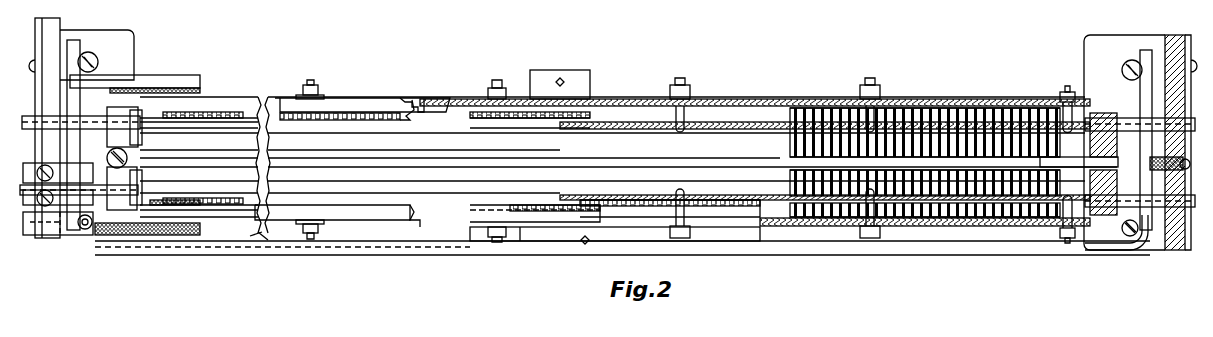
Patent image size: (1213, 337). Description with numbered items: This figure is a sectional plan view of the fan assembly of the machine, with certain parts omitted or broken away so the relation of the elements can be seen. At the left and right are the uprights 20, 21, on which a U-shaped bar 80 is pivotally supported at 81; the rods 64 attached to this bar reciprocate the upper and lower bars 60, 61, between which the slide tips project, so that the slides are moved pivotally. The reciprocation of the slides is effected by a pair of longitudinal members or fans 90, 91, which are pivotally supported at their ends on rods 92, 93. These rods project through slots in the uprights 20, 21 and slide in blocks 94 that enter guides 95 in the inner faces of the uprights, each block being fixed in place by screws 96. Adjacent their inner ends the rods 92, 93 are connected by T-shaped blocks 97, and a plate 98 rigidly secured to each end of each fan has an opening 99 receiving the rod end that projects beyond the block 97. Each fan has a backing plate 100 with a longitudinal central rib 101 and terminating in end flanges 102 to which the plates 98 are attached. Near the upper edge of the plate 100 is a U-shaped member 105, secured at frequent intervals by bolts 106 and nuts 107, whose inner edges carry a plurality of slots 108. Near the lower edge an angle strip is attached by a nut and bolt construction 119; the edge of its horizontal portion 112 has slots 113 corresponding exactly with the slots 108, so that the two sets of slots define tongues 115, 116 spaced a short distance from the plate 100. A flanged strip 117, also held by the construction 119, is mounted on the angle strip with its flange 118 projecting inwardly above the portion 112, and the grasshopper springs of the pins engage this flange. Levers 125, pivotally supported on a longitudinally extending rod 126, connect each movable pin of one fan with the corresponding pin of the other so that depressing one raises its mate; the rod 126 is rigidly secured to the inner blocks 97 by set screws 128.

The upright 20 is at (82, 62).
The upright 21 is at (1138, 68).
The upper bar 60 is at (120, 222).
The lower bar 61 is at (28, 230).
The rod 64 is at (85, 228).
The U-shaped bar 80 is at (440, 255).
The pivot 81 is at (58, 24).
The fan 90 is at (392, 251).
The fan 91 is at (384, 100).
The rod 92 is at (112, 165).
The rod 93 is at (112, 112).
The block 94 is at (1160, 240).
The guide 95 is at (1125, 80).
The screw 96 is at (1183, 172).
The T-shaped block 97 is at (108, 132).
The plate 98 is at (132, 120).
The opening 99 is at (1062, 92).
The backing plate 100 is at (728, 122).
The central rib 101 is at (641, 171).
The flange 102 is at (1050, 110).
The U-shaped member 105 is at (322, 108).
The bolt 106 is at (308, 85).
The nut 107 is at (318, 95).
The slot 108 is at (228, 115).
The horizontal portion 112 is at (505, 110).
The slot 113 is at (582, 105).
The tongue 115 is at (200, 112).
The tongue 116 is at (545, 222).
The flanged strip 117 is at (818, 90).
The flange 118 is at (422, 99).
The nut and bolt construction 119 is at (688, 110).
The lever 125 is at (990, 150).
The rod 126 is at (722, 168).
The set screw 128 is at (108, 235).